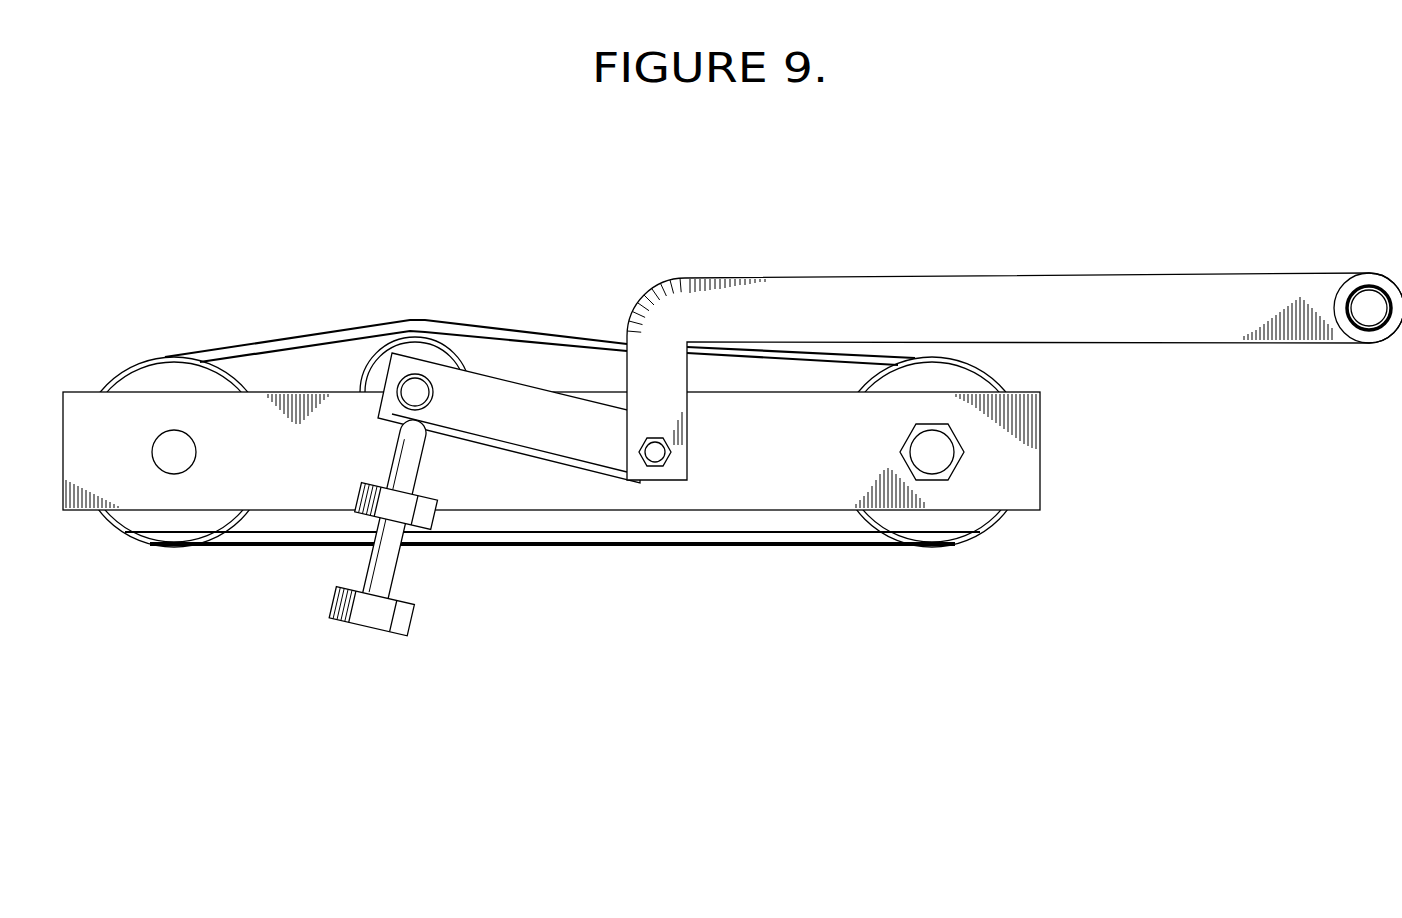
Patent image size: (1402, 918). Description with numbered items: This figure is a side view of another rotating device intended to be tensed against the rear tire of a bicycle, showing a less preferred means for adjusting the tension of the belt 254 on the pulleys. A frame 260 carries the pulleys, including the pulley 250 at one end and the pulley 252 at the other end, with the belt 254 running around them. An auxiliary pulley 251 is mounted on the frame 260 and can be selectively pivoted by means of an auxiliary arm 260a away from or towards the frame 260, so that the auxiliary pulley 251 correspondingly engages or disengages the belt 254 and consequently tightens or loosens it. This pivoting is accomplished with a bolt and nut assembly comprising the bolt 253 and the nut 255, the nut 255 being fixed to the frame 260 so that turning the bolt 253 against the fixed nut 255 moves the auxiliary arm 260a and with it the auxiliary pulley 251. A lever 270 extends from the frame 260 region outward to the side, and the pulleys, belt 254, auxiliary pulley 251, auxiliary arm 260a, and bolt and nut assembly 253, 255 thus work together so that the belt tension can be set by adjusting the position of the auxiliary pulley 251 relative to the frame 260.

The drive pulley 250 is at (932, 451).
The auxiliary pulley 251 is at (362, 370).
The pulley 252 is at (174, 452).
The bolt 253 is at (413, 633).
The belt 254 is at (622, 547).
The nut 255 is at (355, 510).
The frame 260 is at (551, 451).
The auxiliary arm 260a is at (509, 418).
The lever arm 270 is at (1014, 376).